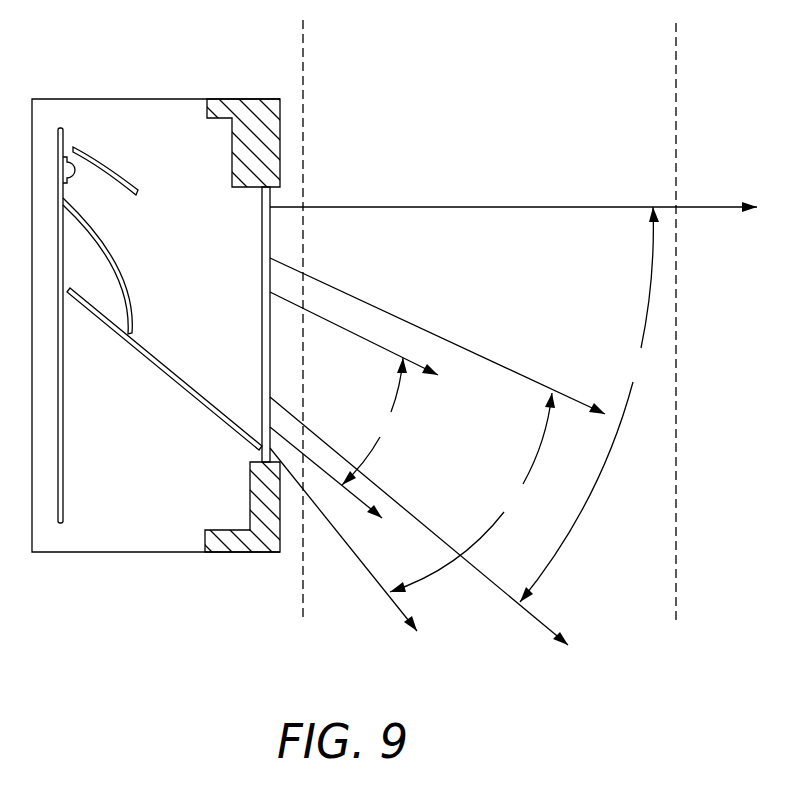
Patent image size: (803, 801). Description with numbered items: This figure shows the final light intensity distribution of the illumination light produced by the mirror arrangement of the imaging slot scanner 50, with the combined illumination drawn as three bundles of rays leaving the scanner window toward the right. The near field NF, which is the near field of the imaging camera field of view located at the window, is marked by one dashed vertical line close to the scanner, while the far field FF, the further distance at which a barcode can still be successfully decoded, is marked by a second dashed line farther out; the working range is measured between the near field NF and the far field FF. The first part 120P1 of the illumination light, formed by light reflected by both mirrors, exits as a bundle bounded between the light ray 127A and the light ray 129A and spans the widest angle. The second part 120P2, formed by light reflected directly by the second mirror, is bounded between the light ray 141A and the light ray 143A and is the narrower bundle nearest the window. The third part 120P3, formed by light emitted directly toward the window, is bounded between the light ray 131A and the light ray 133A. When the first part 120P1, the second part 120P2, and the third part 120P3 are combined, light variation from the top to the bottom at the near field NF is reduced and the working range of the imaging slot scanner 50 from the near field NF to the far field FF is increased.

The imaging slot scanner 50 is at (155, 76).
The near field NF is at (304, 68).
The far field FF is at (675, 66).
The light ray 127A is at (710, 204).
The light ray 131A is at (487, 357).
The light ray 143A is at (352, 333).
The light ray 129A is at (543, 624).
The light ray 141A is at (352, 498).
The light ray 133A is at (360, 562).
The first part of the illumination light 120P1 is at (593, 404).
The second part of the illumination light 120P2 is at (377, 421).
The third part of the illumination light 120P3 is at (472, 492).